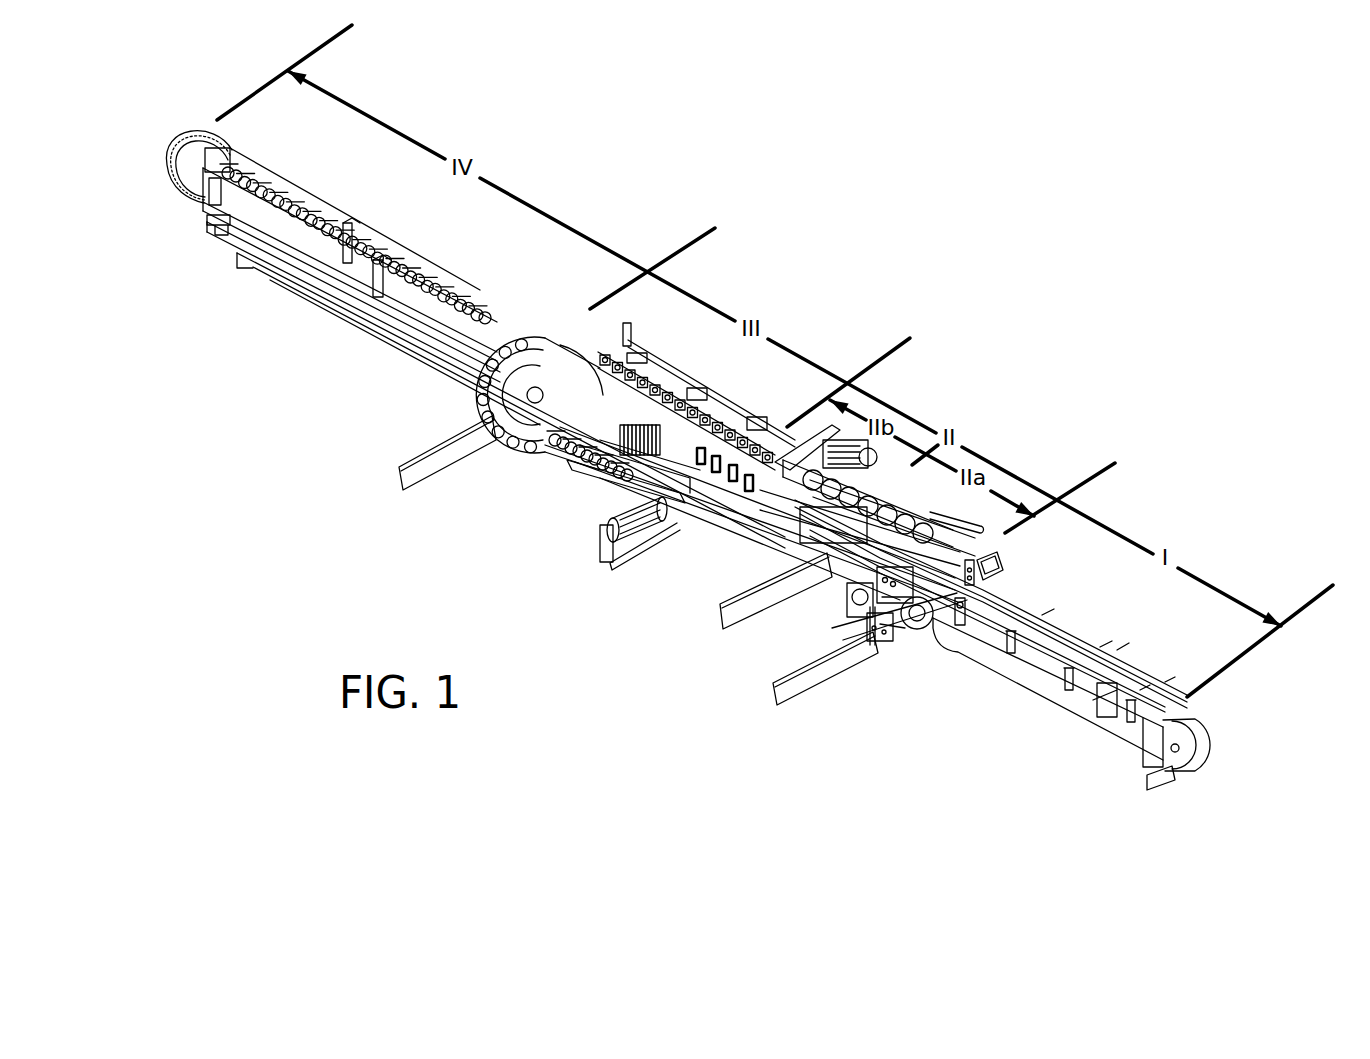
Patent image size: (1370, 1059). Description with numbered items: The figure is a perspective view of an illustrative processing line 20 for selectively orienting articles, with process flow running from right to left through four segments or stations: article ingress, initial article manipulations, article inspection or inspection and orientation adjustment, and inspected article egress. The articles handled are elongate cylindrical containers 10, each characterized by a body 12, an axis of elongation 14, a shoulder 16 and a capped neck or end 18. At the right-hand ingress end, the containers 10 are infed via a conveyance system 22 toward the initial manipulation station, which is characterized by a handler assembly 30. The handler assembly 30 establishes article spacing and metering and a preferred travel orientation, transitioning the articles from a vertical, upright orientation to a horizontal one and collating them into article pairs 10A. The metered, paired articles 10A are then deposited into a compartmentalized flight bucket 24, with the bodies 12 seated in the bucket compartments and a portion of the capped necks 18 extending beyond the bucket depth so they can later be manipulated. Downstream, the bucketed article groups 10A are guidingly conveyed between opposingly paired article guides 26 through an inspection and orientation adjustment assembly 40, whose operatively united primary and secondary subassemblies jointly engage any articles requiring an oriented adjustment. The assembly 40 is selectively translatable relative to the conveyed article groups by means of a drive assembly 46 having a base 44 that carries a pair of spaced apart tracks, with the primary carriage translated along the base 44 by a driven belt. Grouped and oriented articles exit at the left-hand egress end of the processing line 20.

The elongate cylindrical container 10 is at (248, 168).
The article pair 10A is at (362, 216).
The body 12 is at (267, 183).
The axis of elongation 14 is at (233, 263).
The shoulder 16 is at (217, 170).
The capped neck 18 is at (222, 166).
The processing line 20 is at (375, 335).
The conveyance system 22 is at (1131, 738).
The flight bucket 24 is at (310, 218).
The article guides 26 is at (493, 332).
The handler assembly 30 is at (940, 497).
The inspection and orientation adjustment assembly 40 is at (700, 370).
The base 44 is at (673, 493).
The drive assembly 46 is at (602, 505).